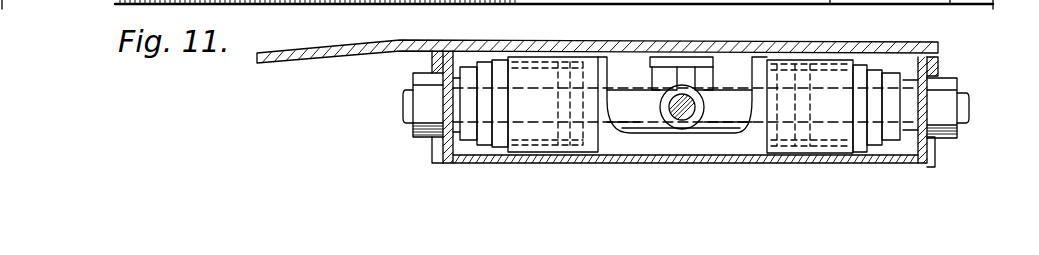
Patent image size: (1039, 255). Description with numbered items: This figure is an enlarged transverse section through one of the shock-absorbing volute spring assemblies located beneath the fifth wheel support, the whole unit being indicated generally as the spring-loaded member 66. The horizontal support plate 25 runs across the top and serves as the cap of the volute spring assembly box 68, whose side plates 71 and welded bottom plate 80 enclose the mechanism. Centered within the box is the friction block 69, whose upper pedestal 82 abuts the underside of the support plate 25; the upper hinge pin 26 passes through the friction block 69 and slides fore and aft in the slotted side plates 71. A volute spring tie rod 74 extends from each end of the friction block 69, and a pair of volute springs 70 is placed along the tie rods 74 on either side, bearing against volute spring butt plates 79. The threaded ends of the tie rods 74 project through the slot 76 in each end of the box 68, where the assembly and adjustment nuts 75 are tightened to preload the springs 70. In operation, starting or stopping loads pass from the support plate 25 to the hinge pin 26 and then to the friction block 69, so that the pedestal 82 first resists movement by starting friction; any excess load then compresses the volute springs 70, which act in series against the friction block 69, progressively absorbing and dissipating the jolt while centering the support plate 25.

The horizontal support plate 25 is at (907, 50).
The upper hinge pin 26 is at (692, 97).
The bolt assembly 66 is at (960, 77).
The volute spring assembly box 68 is at (390, 112).
The friction block 69 is at (707, 142).
The volute springs 70 is at (558, 78).
The side plates 71 is at (476, 62).
The volute spring tie rod 74 is at (403, 115).
The assembly and adjustment nuts 75 is at (420, 75).
The slot 76 is at (933, 156).
The volute spring butt plates 79 is at (932, 74).
The bottom plate 80 is at (563, 164).
The friction block upper pedestal 82 is at (662, 58).